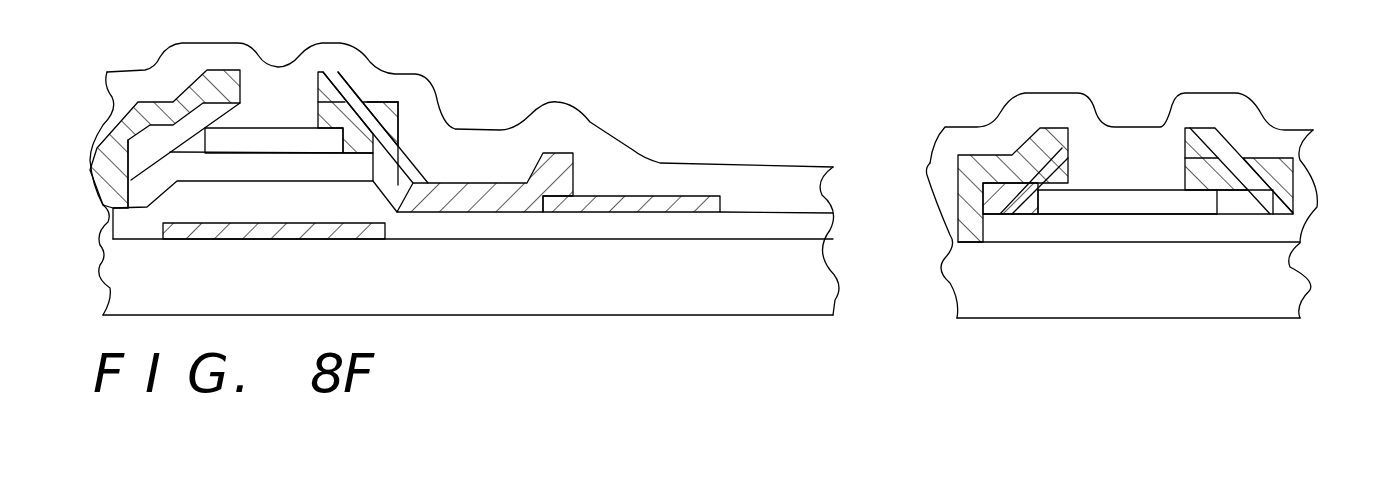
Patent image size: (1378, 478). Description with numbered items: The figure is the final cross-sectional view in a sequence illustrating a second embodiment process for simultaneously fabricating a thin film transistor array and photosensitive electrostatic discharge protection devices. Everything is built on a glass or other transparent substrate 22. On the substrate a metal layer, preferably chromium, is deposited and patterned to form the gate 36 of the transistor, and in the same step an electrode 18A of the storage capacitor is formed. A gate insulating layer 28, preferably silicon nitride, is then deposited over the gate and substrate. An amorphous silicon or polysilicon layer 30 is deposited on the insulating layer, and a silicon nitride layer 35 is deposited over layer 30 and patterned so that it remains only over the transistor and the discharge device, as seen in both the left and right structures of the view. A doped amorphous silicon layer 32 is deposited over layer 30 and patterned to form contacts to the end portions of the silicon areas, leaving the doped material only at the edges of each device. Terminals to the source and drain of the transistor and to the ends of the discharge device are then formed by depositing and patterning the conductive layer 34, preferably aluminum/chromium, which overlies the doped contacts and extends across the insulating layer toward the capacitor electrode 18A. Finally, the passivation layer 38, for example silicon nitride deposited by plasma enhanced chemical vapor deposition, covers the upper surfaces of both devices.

The electrode of the capacitor 18A is at (610, 193).
The substrate 22 is at (793, 307).
The gate insulating layer 28 is at (823, 232).
The amorphous silicon layer 30 is at (147, 198).
The doped amorphous silicon layer 32 is at (157, 127).
The conductive layer 34 is at (385, 72).
The silicon nitride layer 35 is at (291, 140).
The gate 36 is at (373, 233).
The passivation layer 38 is at (473, 147).